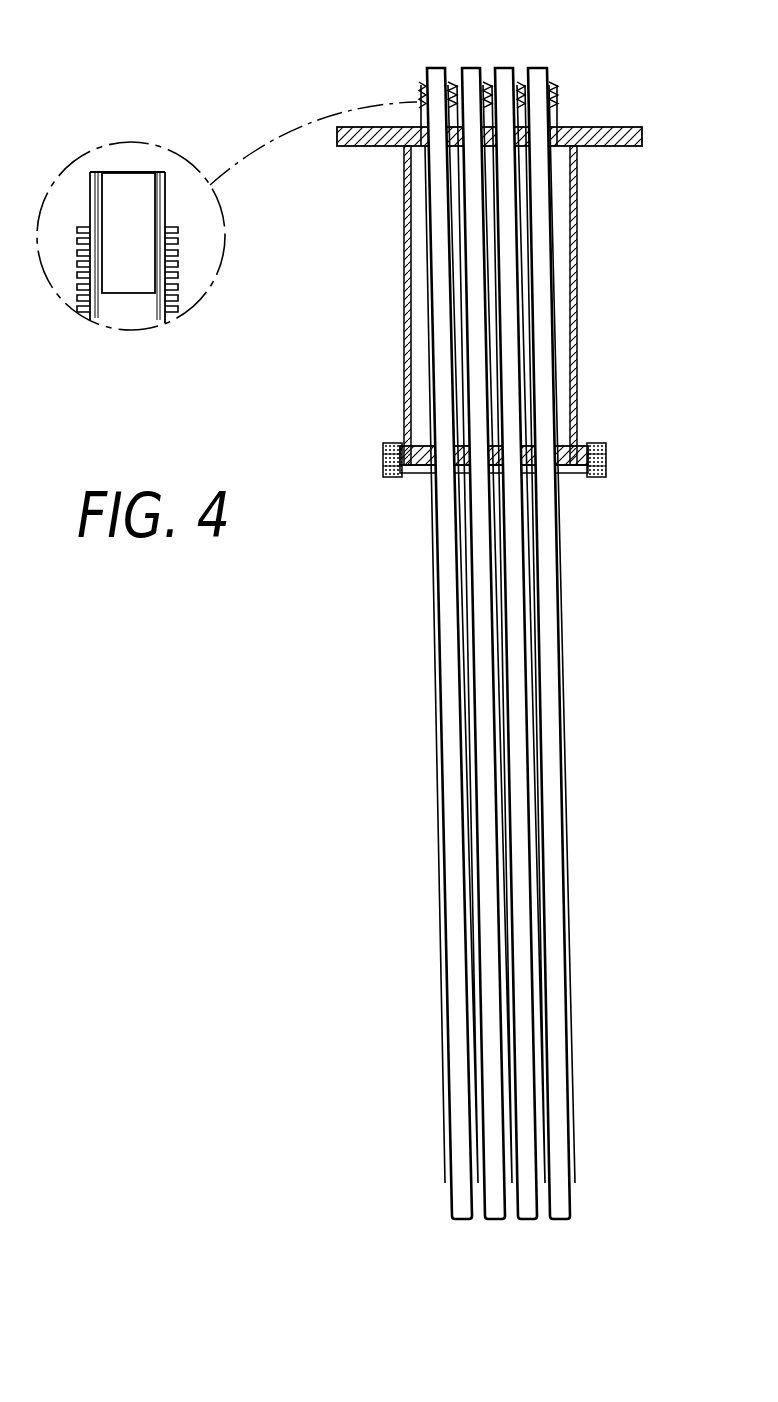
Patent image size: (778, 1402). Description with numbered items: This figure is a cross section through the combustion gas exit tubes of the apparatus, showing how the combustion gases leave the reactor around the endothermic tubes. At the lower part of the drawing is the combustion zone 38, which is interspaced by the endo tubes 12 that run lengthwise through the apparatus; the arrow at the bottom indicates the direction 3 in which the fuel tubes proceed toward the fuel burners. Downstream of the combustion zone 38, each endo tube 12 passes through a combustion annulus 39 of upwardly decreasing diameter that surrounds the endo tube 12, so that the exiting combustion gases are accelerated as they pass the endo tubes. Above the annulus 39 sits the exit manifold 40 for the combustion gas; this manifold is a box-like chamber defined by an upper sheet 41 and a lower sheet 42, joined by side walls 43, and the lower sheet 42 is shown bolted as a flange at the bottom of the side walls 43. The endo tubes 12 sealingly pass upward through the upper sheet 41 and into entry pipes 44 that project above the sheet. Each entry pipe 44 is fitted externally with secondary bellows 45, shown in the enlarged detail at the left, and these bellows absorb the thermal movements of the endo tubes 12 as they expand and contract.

The direction 3 is at (515, 1230).
The endothermic tubes 12 is at (437, 208).
The combustion zone 38 is at (543, 1218).
The combustion annulus 39 is at (572, 1043).
The exit manifold 40 is at (552, 232).
The upper sheet 41 is at (378, 135).
The lower sheet 42 is at (563, 467).
The side walls 43 is at (573, 307).
The entry pipes 44 is at (422, 92).
The secondary bellows 45 is at (420, 90).